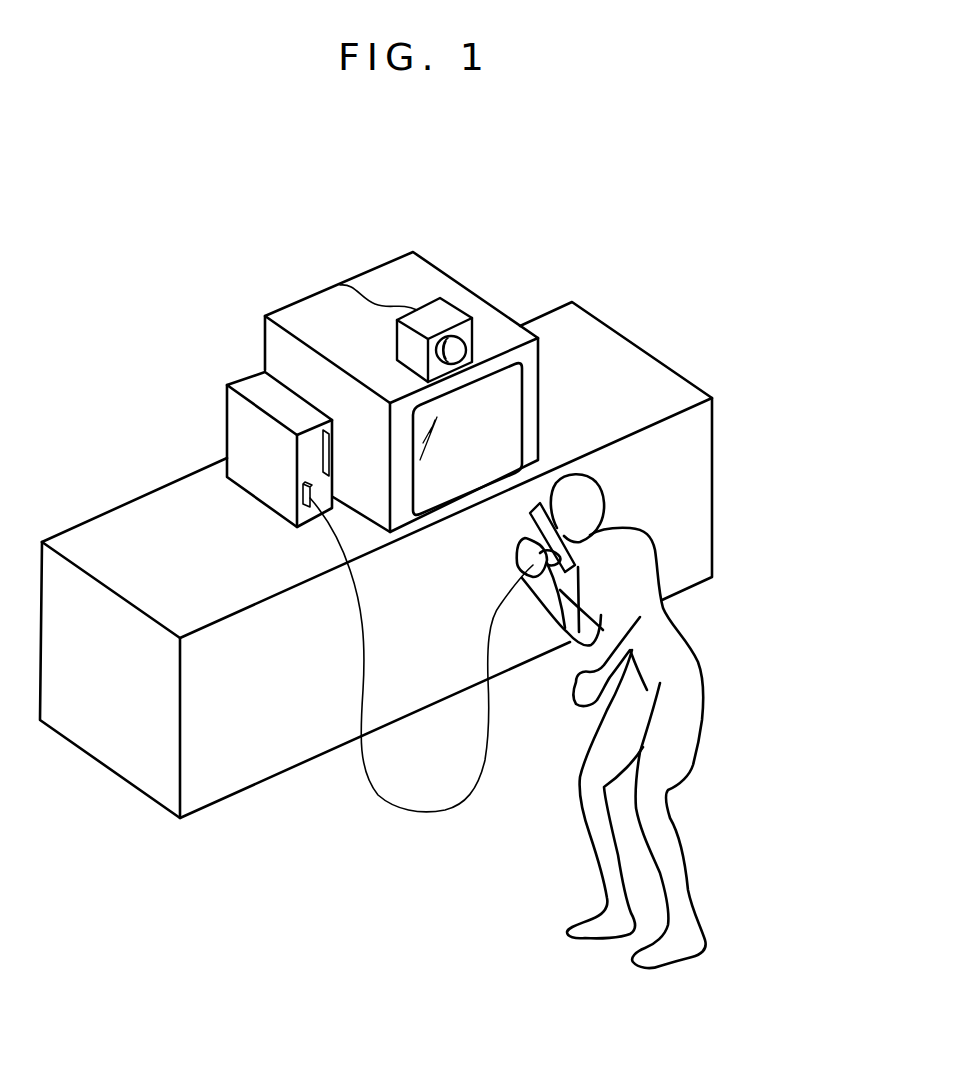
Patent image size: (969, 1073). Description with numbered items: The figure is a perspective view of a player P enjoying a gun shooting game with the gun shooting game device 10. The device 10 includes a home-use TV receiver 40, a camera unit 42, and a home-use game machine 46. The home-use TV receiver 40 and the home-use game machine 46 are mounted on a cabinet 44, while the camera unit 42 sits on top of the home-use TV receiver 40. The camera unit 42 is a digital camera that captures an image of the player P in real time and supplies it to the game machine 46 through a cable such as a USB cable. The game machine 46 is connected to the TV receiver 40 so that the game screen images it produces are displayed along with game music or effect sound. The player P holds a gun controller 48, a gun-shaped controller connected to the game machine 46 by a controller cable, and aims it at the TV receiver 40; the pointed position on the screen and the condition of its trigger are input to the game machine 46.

The gun shooting game device 10 is at (327, 940).
The home-use TV receiver 40 is at (263, 343).
The camera unit 42 is at (457, 307).
The cabinet 44 is at (648, 347).
The home-use game machine 46 is at (227, 407).
The gun controller 48 is at (537, 520).
The player P is at (697, 720).